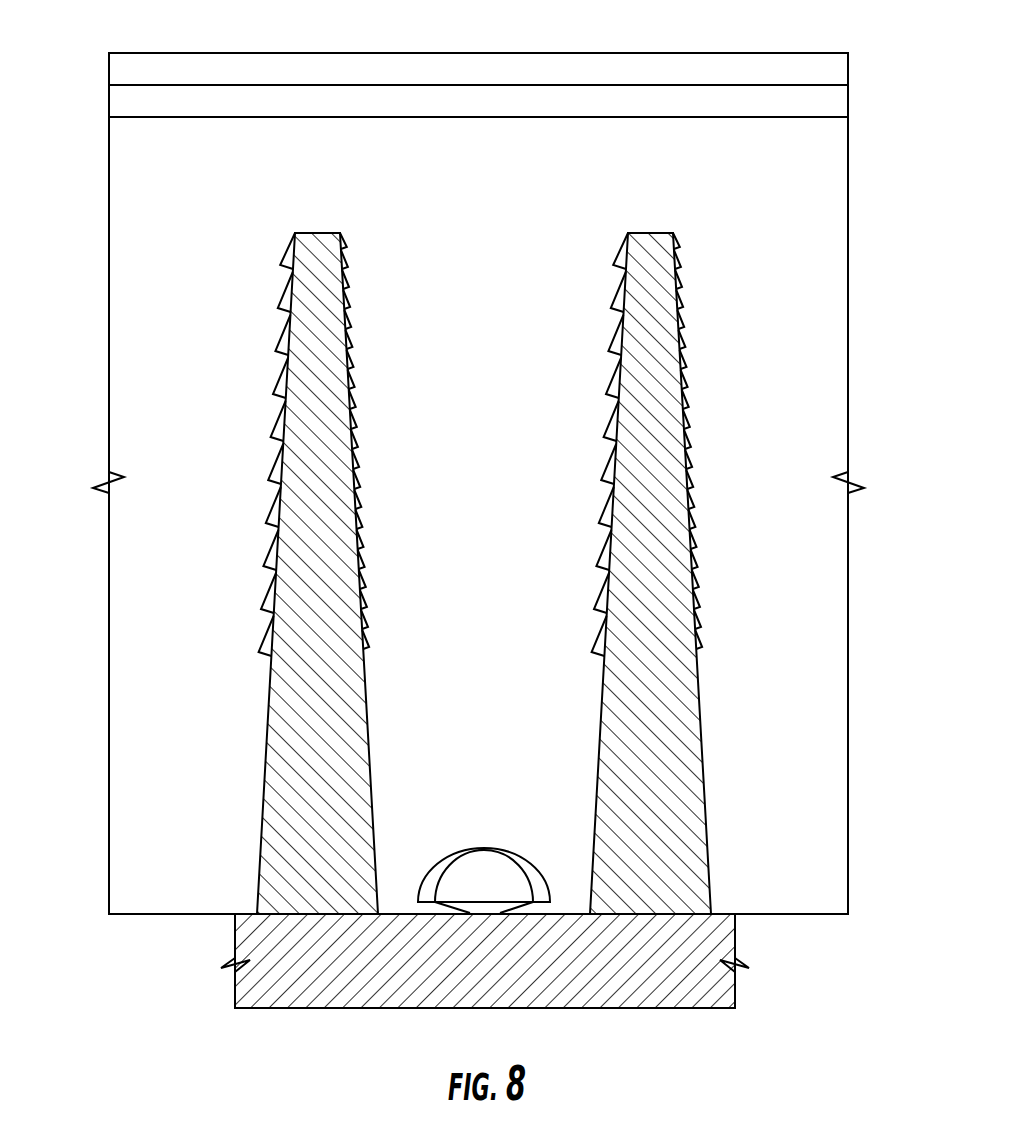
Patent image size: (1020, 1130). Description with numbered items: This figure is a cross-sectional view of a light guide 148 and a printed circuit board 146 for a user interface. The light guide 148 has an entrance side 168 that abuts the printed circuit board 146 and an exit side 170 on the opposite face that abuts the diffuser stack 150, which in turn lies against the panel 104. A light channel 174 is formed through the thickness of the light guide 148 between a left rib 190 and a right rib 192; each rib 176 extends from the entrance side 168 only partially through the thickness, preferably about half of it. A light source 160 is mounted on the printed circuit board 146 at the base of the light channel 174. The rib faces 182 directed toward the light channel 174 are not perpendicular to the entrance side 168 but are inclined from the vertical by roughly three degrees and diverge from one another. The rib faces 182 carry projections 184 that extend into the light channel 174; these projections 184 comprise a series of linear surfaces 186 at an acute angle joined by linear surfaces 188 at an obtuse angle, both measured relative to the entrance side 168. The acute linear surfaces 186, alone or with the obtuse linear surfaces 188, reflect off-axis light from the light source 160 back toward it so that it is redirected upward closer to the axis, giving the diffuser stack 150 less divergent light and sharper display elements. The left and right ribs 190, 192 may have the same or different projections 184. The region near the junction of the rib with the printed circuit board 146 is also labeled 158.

The panel 104 is at (108, 72).
The diffuser stack 150 is at (108, 102).
The exit side 170 is at (142, 118).
The light guide 148 is at (878, 196).
The left rib 190 is at (318, 233).
The right rib 192 is at (651, 233).
The rib 176 is at (287, 855).
The projections 184 is at (575, 395).
The light channel 174 is at (510, 449).
The linear surfaces at an obtuse angle 188 is at (363, 641).
The linear surfaces at an acute angle 186 is at (364, 643).
The rib face 182 is at (369, 746).
The light source 160 is at (463, 880).
The printed circuit board 146 is at (633, 993).
The rib base corner 158 is at (255, 912).
The entrance side 168 is at (165, 915).